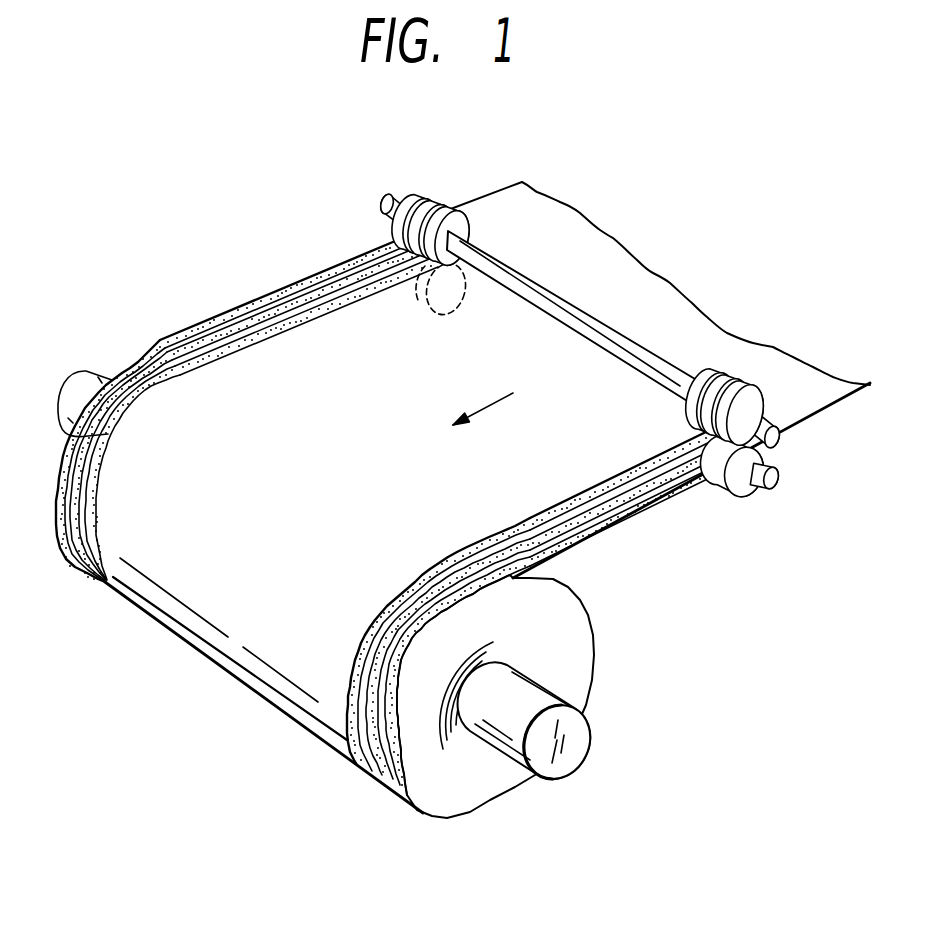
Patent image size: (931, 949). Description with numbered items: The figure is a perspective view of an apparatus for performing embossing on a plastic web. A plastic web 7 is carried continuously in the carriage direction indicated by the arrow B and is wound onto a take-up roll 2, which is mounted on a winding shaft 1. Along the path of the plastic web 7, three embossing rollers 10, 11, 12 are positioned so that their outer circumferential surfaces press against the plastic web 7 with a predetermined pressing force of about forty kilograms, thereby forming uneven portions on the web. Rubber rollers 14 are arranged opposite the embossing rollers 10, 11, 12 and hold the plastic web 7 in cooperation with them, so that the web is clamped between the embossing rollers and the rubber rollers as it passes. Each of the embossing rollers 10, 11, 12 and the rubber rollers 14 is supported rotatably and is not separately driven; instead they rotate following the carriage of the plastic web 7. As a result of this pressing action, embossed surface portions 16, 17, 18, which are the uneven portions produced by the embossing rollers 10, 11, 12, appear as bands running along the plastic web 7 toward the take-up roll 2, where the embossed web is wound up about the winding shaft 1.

The winding shaft 1 is at (543, 770).
The take-up roll 2 is at (487, 793).
The plastic web 7 is at (633, 273).
The embossing roller 10 is at (410, 192).
The embossing roller 11 is at (438, 200).
The embossing roller 12 is at (453, 212).
The rubber roller 14 is at (740, 490).
The embossed surface portion 16 is at (297, 295).
The embossed surface portion 17 is at (262, 330).
The embossed surface portion 18 is at (222, 360).
The arrow indicating carriage direction B is at (503, 400).